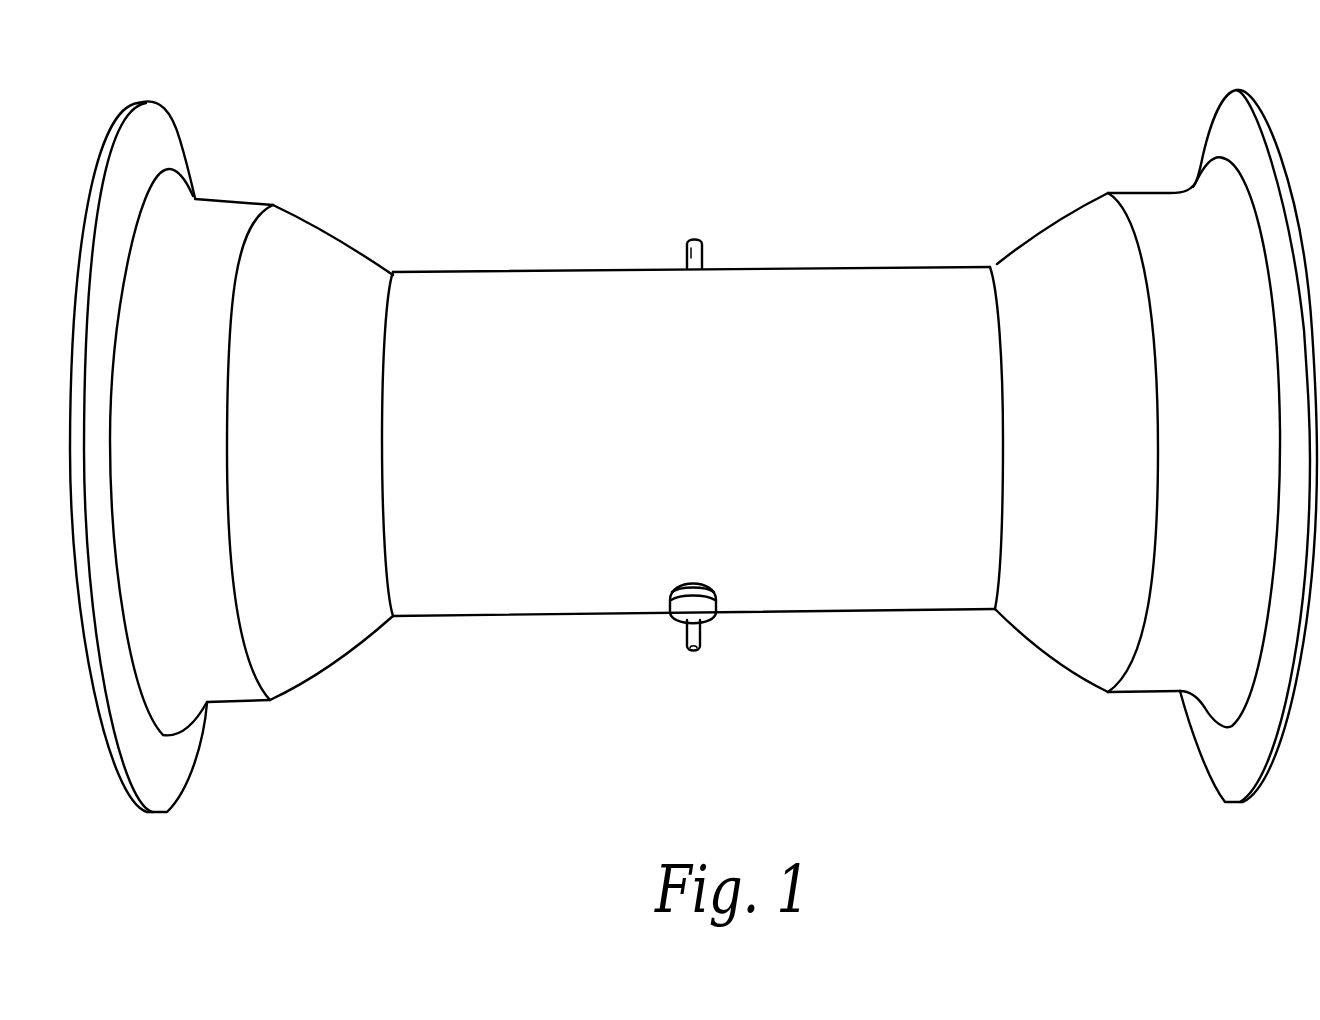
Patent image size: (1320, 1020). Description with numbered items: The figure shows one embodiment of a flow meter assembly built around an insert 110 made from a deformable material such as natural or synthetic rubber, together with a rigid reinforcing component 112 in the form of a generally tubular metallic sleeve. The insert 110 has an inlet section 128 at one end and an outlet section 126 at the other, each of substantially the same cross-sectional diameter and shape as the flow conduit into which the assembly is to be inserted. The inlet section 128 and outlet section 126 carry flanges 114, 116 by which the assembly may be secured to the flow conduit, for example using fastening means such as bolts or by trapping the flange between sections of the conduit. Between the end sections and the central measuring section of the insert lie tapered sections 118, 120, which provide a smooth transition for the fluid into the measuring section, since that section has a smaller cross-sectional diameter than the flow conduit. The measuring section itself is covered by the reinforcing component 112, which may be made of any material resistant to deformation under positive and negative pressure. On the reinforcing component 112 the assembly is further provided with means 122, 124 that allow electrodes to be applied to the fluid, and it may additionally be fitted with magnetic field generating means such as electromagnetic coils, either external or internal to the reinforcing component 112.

The insert 110 is at (195, 213).
The reinforcing component 112 is at (823, 313).
The flange 114 is at (168, 783).
The flange 116 is at (1230, 115).
The tapered section 118 is at (1075, 228).
The tapered section 120 is at (315, 250).
The means to allow electrodes to be applied to the fluid 122 is at (697, 653).
The means to allow electrodes to be applied to the fluid 124 is at (695, 241).
The outlet section 126 is at (1160, 677).
The inlet section 128 is at (240, 678).